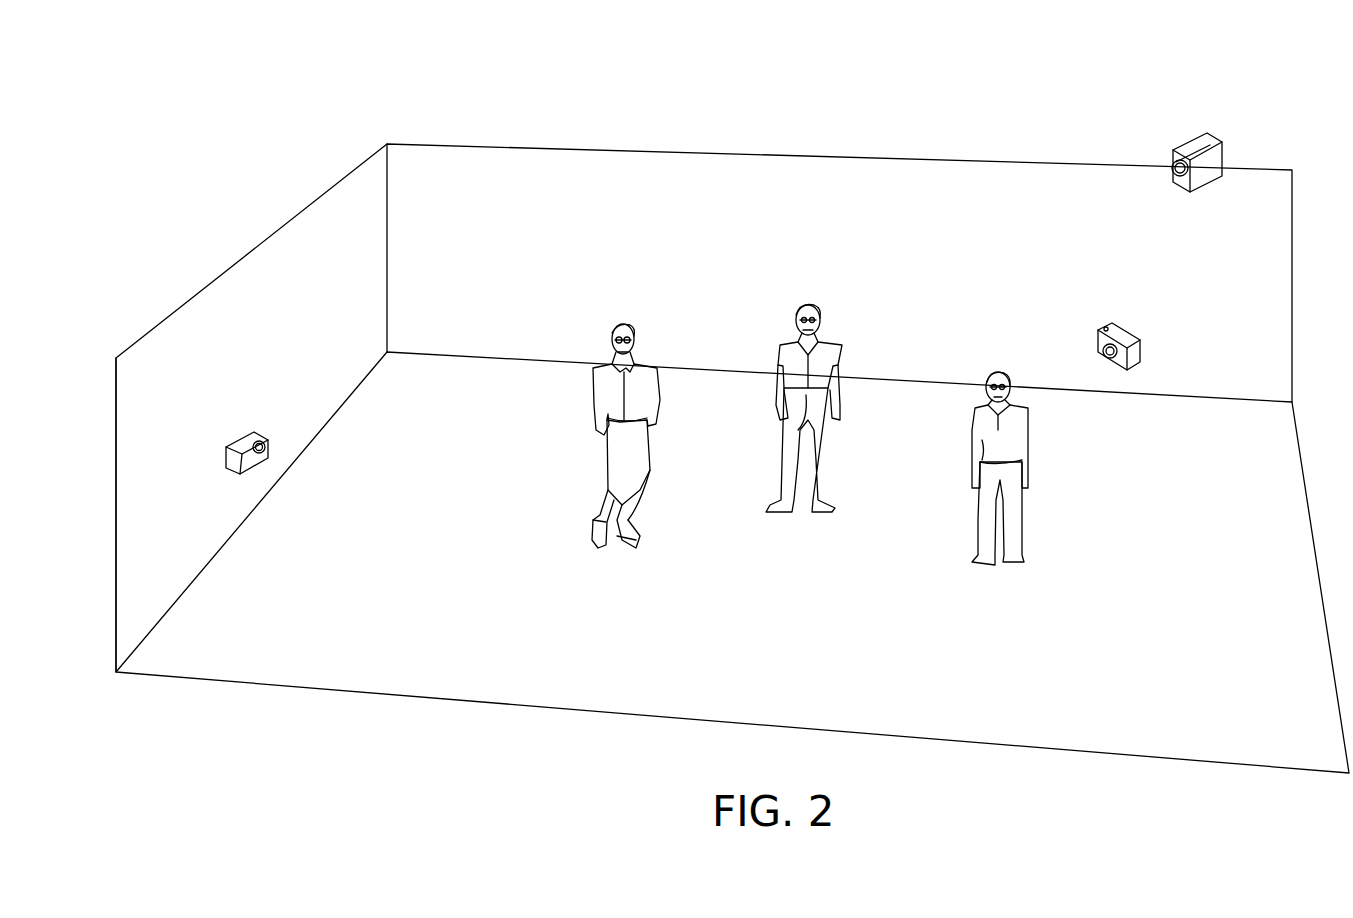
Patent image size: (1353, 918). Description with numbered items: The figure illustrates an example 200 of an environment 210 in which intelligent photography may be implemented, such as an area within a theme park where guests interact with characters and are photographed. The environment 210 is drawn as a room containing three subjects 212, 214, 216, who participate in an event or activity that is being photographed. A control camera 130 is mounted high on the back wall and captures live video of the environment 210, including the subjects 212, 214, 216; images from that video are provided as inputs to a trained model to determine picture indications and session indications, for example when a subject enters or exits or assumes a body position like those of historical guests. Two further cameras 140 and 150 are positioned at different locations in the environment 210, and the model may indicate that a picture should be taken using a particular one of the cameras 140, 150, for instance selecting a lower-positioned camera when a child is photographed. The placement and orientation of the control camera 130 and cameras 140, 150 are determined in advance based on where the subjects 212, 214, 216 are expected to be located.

The example 200 is at (258, 60).
The environment 210 is at (252, 251).
The control camera 130 is at (1190, 140).
The camera 140 is at (1120, 327).
The camera 150 is at (248, 433).
The subject 212 is at (622, 320).
The subject 214 is at (807, 303).
The subject 216 is at (1003, 372).